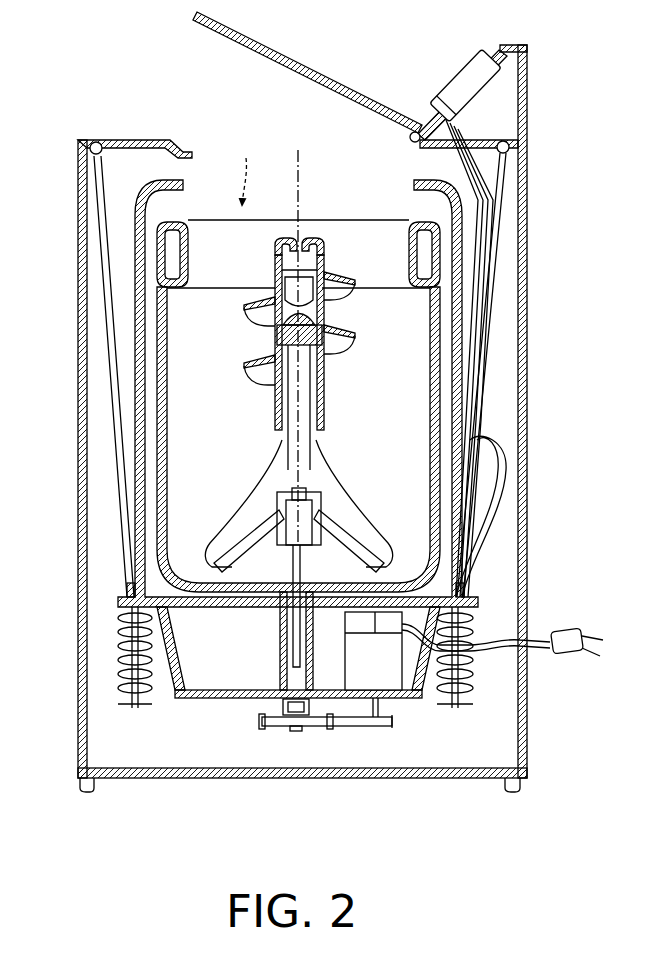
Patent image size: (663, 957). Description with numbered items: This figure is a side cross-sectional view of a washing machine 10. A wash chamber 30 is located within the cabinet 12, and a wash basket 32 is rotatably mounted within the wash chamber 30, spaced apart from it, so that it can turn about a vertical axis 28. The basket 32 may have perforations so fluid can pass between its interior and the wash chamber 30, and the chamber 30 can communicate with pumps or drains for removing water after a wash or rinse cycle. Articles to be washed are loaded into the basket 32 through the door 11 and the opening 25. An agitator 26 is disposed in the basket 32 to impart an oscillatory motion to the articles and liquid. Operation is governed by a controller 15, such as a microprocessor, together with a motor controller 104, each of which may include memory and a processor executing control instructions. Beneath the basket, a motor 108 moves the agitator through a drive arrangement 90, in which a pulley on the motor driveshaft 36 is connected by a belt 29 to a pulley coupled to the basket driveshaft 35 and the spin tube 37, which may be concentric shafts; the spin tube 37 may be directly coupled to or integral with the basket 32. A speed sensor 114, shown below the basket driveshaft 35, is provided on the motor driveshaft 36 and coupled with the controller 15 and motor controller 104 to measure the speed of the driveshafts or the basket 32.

The washing machine 10 is at (116, 50).
The door 11 is at (308, 68).
The cabinet 12 is at (78, 176).
The controller 15 is at (488, 86).
The opening 25 is at (249, 169).
The vertical axis 28 is at (303, 158).
The wash chamber 30 is at (130, 285).
The wash basket 32 is at (432, 362).
The agitator 26 is at (330, 448).
The spin tube 37 is at (283, 630).
The basket driveshaft 35 is at (294, 668).
The motor 108 is at (400, 696).
The motor controller 104 is at (392, 598).
The speed sensor 114 is at (270, 706).
The motor driveshaft 36 is at (378, 705).
The belt 29 is at (308, 735).
The drive arrangement 90 is at (279, 736).